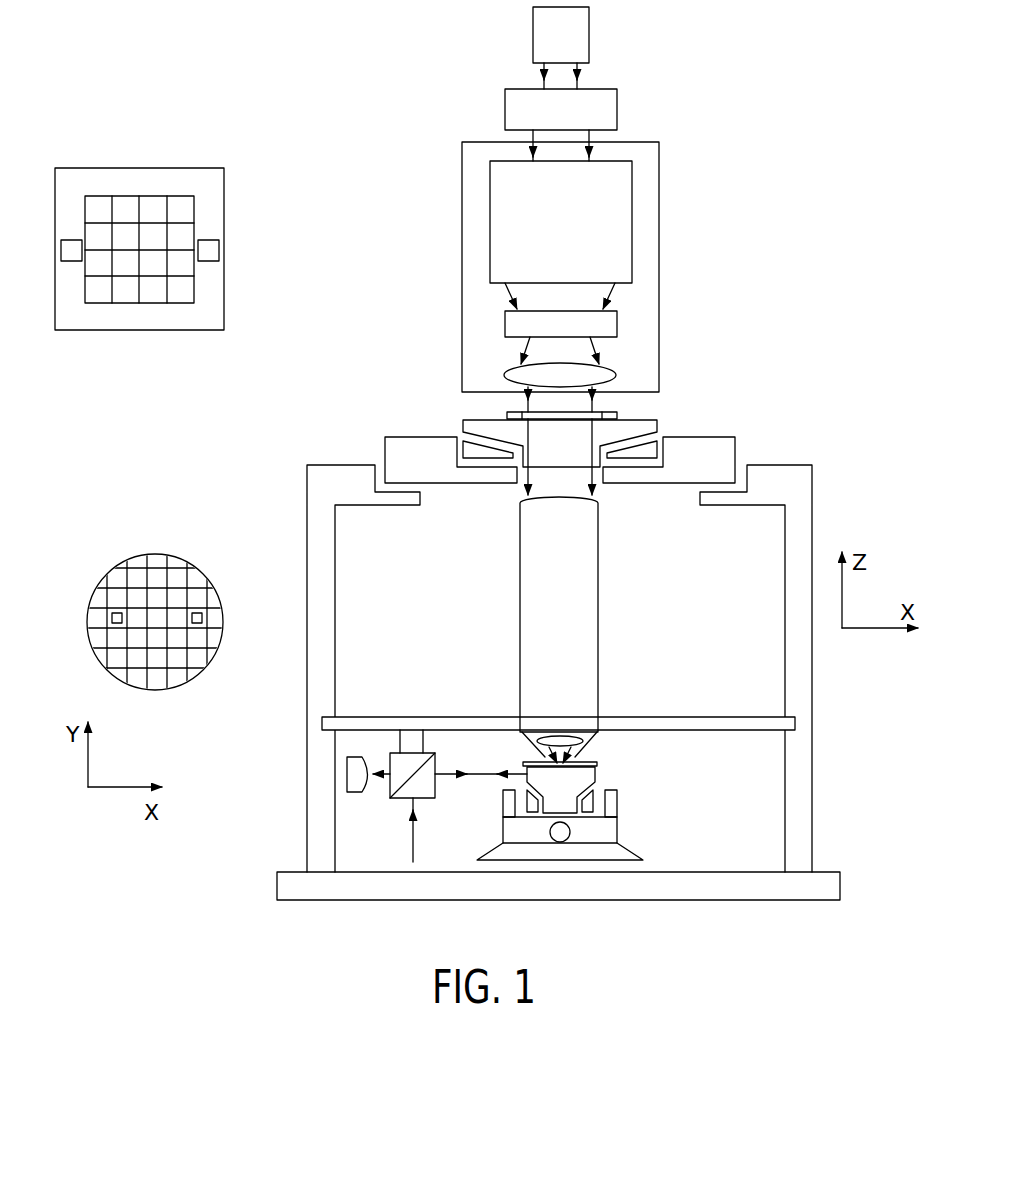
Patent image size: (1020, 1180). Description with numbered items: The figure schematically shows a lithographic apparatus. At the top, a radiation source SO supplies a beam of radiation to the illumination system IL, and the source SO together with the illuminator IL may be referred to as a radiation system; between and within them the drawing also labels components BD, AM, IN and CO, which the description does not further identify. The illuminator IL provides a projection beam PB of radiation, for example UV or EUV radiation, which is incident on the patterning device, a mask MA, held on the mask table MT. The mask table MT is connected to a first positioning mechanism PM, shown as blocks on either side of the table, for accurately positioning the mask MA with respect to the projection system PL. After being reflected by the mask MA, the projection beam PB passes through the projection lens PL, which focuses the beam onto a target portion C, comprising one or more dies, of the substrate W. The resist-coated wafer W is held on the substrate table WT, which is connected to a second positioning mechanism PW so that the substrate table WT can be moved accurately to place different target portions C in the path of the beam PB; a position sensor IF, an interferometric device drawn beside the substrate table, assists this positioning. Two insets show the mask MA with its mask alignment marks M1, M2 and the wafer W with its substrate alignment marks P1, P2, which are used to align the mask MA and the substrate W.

The radiation source SO is at (589, 40).
The beam delivery system BD is at (617, 118).
The illumination system IL is at (659, 162).
The adjusting means AM is at (632, 228).
The integrator IN is at (617, 322).
The condenser CO is at (616, 375).
The projection beam PB is at (565, 408).
The patterning device MA is at (240, 282).
The mask table MT is at (660, 428).
The first positioning mechanism PM is at (385, 447).
The projection system PL is at (600, 603).
The substrate W is at (242, 623).
The substrate table WT is at (597, 775).
The second positioning mechanism PW is at (617, 831).
The position sensor IF is at (381, 799).
The mask alignment mark M1 is at (208, 240).
The mask alignment mark M2 is at (71, 240).
The target portion C is at (123, 239).
The substrate alignment mark P1 is at (116, 613).
The substrate alignment mark P2 is at (197, 613).